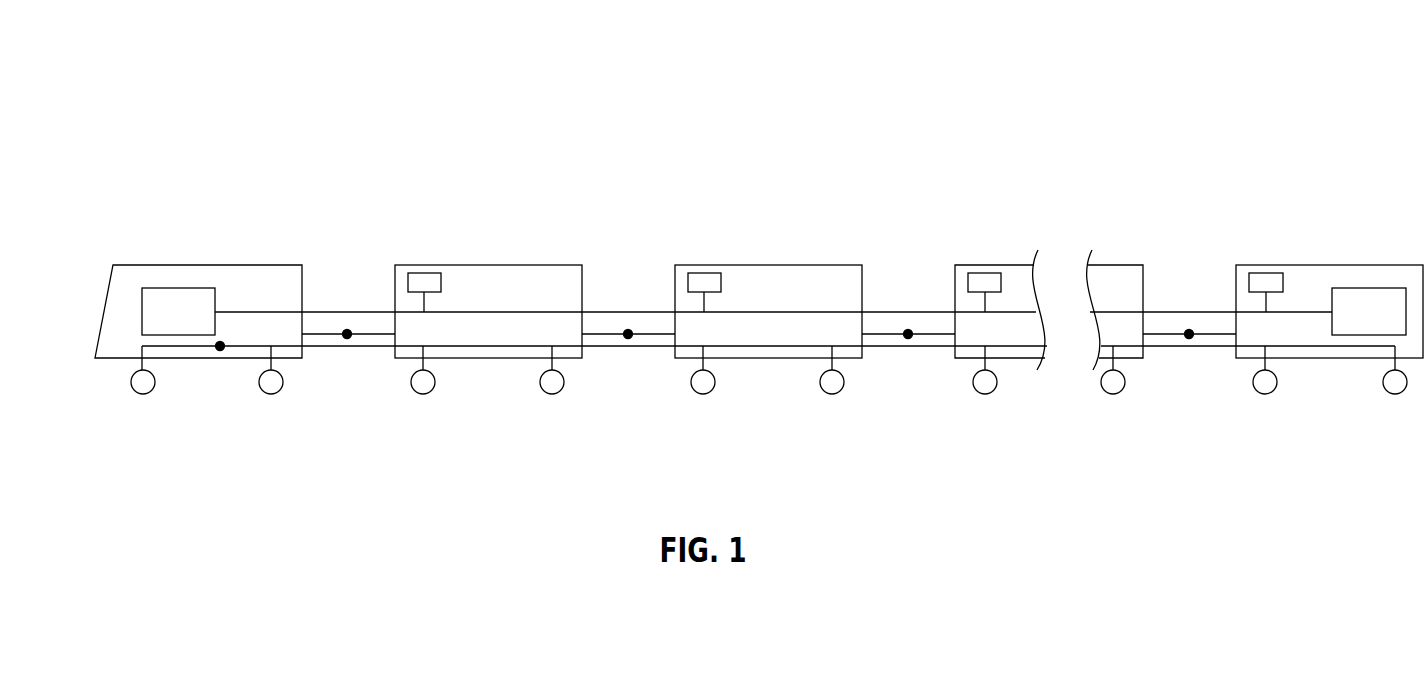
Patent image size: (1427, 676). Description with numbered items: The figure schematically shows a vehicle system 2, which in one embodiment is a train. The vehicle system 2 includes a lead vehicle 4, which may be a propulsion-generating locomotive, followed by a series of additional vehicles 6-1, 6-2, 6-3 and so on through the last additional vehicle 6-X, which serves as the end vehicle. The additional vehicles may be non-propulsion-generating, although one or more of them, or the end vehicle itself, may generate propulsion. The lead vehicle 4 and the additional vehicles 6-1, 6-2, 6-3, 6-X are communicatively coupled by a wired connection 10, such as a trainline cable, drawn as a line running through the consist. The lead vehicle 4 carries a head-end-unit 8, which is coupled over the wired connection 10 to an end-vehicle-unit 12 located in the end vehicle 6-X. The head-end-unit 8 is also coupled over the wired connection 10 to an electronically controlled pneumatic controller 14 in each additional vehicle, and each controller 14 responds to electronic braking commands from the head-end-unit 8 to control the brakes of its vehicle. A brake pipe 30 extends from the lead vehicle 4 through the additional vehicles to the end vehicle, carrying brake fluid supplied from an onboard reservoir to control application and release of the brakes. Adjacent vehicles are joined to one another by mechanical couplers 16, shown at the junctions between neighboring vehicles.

The vehicle system 2 is at (796, 72).
The lead vehicle 4 is at (205, 265).
The head-end-unit (HEU) 8 is at (162, 288).
The additional vehicle 6-1 is at (465, 265).
The additional vehicle 6-2 is at (745, 265).
The additional vehicle 6-3 is at (1022, 265).
The additional vehicle (end vehicle) 6-X is at (1323, 265).
The wired connection 10 is at (335, 312).
The end-vehicle-unit (EVU) 12 is at (1369, 288).
The electronically controlled pneumatic (ECP) controller 14 is at (424, 273).
The mechanical coupler 16 is at (347, 334).
The brake pipe 30 is at (220, 346).